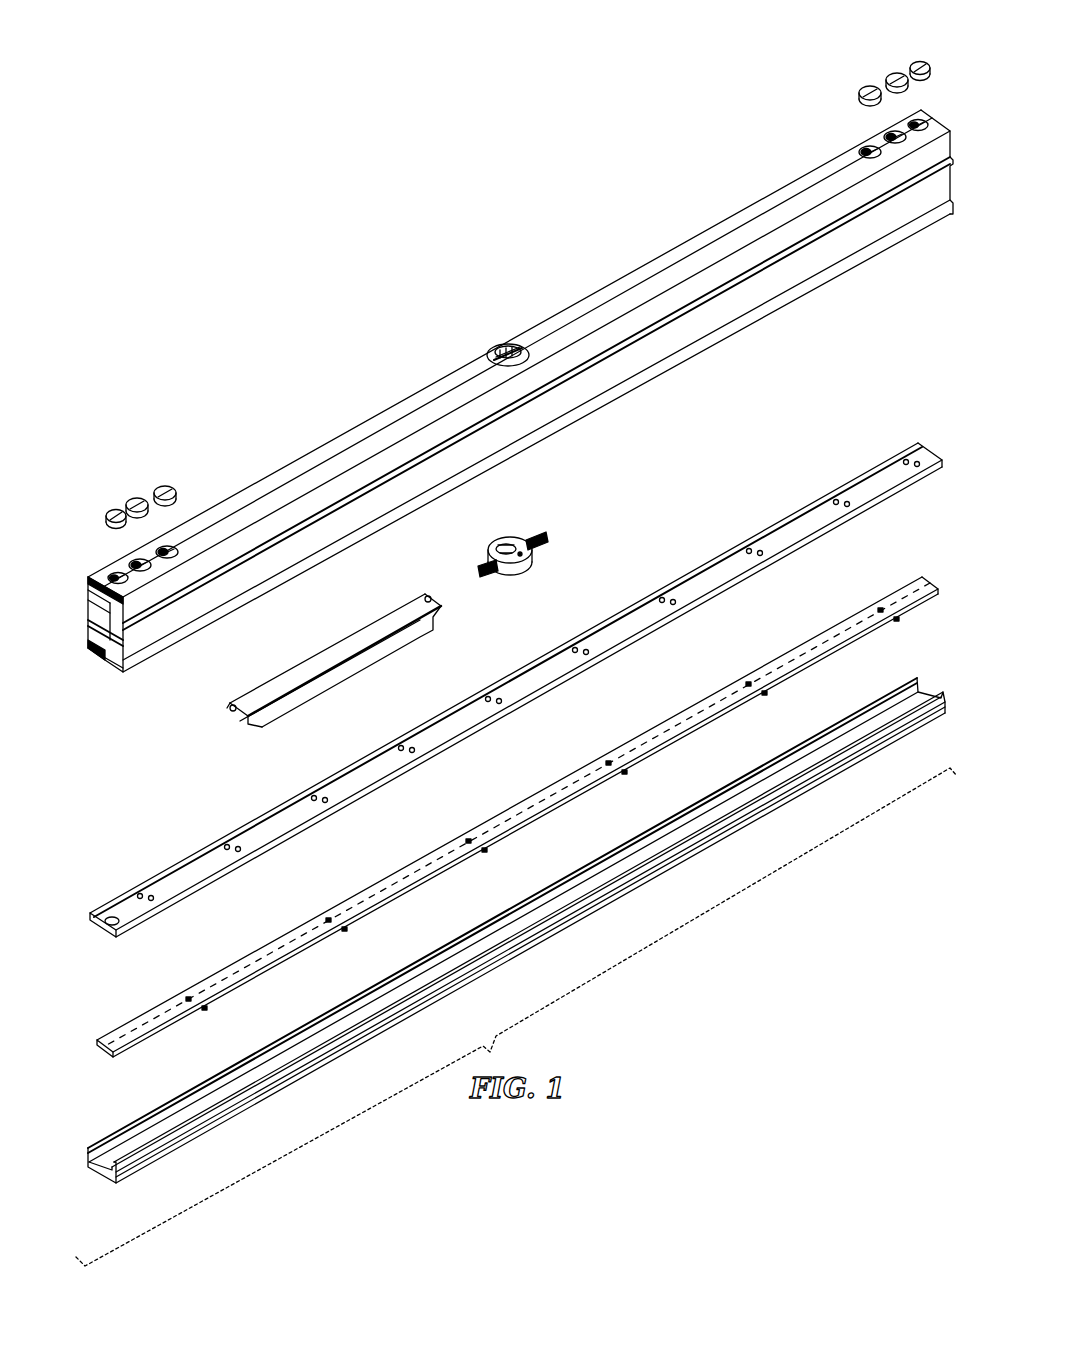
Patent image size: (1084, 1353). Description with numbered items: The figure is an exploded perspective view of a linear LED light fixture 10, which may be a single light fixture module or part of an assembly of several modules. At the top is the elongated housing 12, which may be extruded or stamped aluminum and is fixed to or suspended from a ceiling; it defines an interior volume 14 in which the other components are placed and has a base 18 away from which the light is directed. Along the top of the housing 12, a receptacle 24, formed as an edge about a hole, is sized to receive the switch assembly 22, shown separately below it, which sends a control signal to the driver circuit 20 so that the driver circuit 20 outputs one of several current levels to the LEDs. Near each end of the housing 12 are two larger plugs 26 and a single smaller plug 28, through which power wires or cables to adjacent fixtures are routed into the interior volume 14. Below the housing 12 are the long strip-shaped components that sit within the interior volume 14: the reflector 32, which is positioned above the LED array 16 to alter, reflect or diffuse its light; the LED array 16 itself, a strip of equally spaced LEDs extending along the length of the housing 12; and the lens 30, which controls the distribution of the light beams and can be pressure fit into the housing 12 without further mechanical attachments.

The linear LED light fixture 10 is at (292, 58).
The housing 12 is at (432, 382).
The interior volume 14 is at (90, 605).
The LED array 16 is at (446, 850).
The base 18 is at (264, 428).
The driver circuit 20 is at (326, 652).
The switch assembly 22 is at (500, 546).
The receptacle 24 is at (516, 348).
The plugs 26 is at (162, 490).
The plug 28 is at (116, 509).
The lens 30 is at (568, 878).
The reflector 32 is at (508, 680).